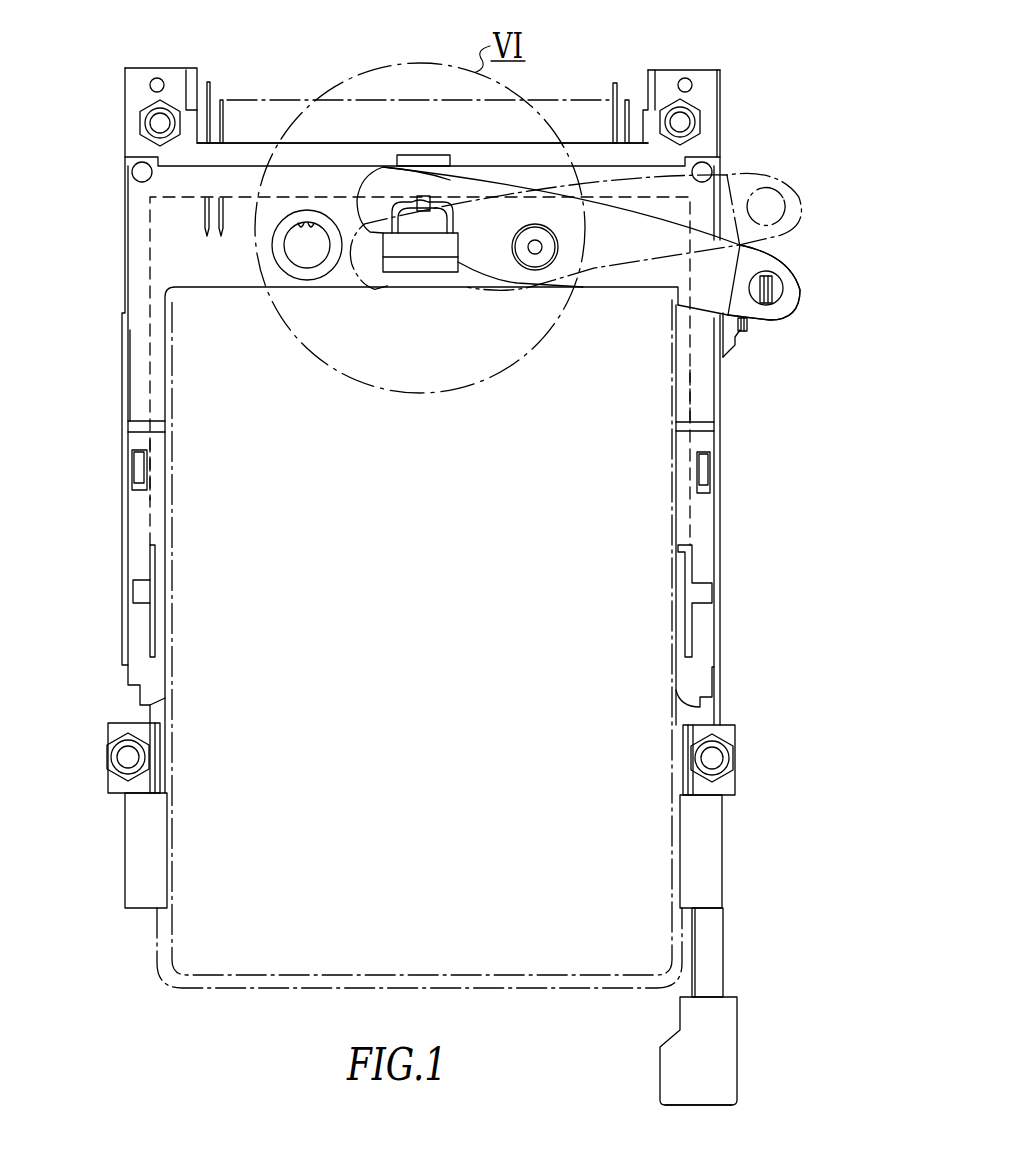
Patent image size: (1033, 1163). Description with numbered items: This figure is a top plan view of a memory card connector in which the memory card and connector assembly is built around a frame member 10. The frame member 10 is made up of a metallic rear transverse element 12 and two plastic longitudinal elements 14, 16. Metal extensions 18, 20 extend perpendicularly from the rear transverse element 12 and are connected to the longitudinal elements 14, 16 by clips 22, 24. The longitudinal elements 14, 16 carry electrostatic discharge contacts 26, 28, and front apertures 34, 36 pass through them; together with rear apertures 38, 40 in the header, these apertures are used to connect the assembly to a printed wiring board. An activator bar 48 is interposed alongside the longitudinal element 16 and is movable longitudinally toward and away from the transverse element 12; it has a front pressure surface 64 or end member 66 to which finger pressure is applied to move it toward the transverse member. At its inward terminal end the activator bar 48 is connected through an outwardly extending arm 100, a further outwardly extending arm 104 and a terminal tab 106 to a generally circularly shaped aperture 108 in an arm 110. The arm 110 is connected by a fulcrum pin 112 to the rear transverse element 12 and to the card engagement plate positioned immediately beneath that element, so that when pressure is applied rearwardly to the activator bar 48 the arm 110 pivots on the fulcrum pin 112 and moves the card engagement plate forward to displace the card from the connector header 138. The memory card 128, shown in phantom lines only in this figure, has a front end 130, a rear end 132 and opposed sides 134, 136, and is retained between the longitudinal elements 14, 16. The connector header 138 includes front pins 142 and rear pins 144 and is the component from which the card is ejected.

The frame member 10 is at (712, 82).
The rear transverse element 12 is at (245, 213).
The longitudinal element 14 is at (140, 843).
The longitudinal element 16 is at (710, 855).
The metal extension 18 is at (138, 276).
The metal extension 20 is at (702, 350).
The clip 22 is at (133, 468).
The clip 24 is at (705, 475).
The electrostatic discharge contact 26 is at (160, 562).
The electrostatic discharge contact 28 is at (680, 572).
The front aperture 34 is at (120, 757).
The front aperture 36 is at (712, 758).
The rear aperture 38 is at (150, 123).
The rear aperture 40 is at (680, 122).
The activator bar 48 is at (712, 965).
The front pressure surface 64 is at (700, 1107).
The end member 66 is at (725, 1045).
The outwardly extending arm 100 is at (740, 350).
The outwardly extending arm 104 is at (758, 293).
The terminal tab 106 is at (783, 283).
The aperture 108 is at (773, 206).
The arm 110 is at (738, 165).
The fulcrum pin 112 is at (517, 283).
The memory card 128 is at (419, 974).
The front end 130 is at (585, 990).
The rear end 132 is at (312, 132).
The side 134 is at (160, 462).
The side 136 is at (653, 405).
The connector header 138 is at (385, 109).
The front pins 142 is at (197, 217).
The rear pins 144 is at (210, 83).